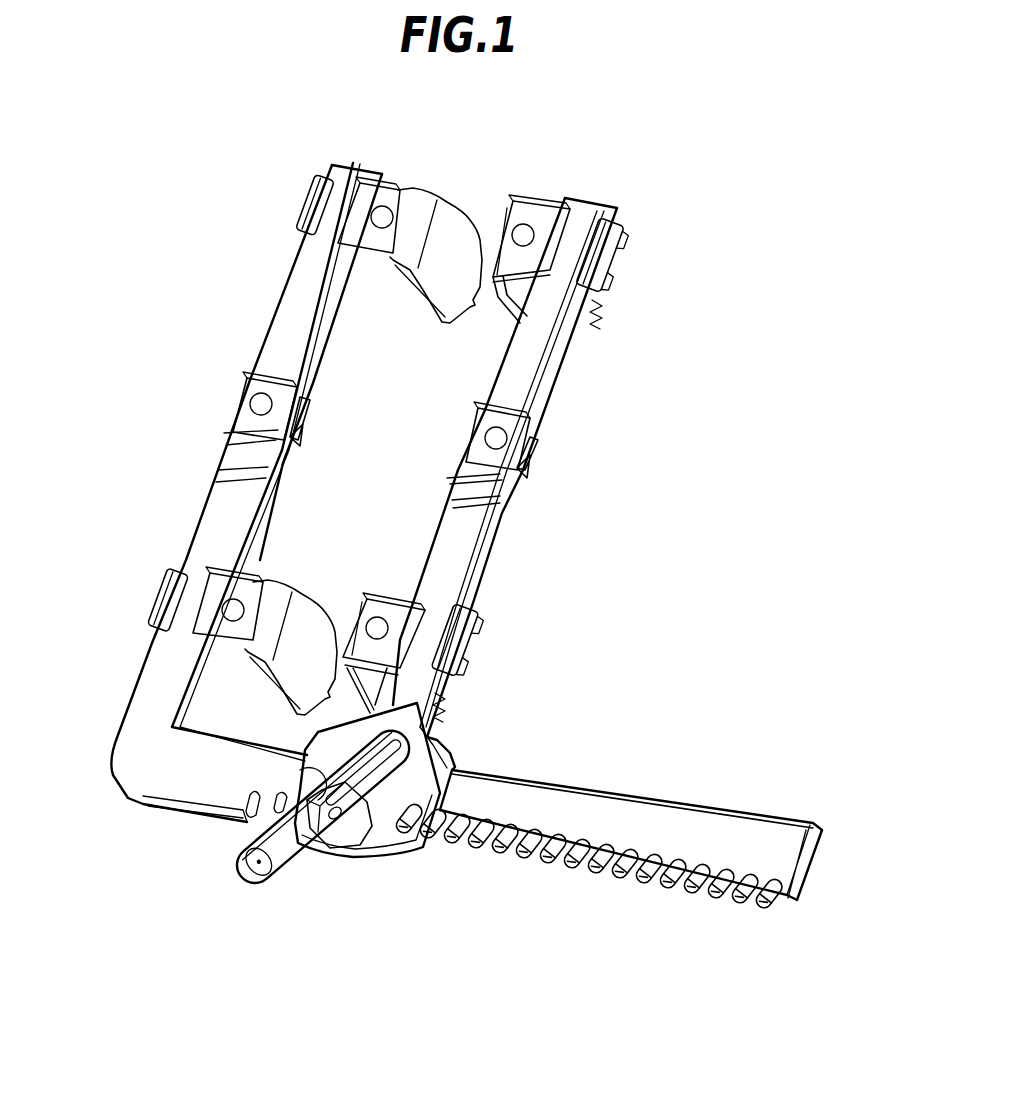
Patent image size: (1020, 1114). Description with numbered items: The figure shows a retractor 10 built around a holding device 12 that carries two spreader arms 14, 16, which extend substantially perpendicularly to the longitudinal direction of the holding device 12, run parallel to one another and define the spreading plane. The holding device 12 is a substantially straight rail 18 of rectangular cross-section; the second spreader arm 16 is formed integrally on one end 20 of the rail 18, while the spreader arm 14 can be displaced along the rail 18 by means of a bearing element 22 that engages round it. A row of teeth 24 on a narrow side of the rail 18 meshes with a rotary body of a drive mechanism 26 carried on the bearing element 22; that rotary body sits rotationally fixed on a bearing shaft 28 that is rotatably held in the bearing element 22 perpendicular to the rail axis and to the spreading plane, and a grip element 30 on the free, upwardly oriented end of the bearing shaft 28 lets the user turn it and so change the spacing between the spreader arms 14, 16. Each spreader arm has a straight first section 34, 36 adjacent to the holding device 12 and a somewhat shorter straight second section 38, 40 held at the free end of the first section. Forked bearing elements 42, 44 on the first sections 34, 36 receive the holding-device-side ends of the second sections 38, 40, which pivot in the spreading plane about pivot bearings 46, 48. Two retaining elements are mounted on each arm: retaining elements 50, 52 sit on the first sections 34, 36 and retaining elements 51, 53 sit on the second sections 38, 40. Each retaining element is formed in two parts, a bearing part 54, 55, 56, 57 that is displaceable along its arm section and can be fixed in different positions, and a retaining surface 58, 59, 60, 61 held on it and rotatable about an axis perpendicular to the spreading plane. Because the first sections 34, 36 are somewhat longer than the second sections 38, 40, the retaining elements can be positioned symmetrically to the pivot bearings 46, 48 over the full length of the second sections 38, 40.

The retractor 10 is at (696, 487).
The holding device 12 is at (480, 905).
The spreader arm 14 is at (535, 536).
The spreader arm 16 is at (188, 456).
The rail 18 is at (700, 780).
The end of rail 20 is at (120, 815).
The bearing element 22 is at (470, 745).
The row of teeth 24 is at (604, 876).
The drive mechanism 26 is at (318, 886).
The bearing shaft 28 is at (345, 847).
The grip element 30 is at (256, 871).
The first section 34 is at (457, 566).
The first section 36 is at (222, 527).
The second section 38 is at (535, 351).
The second section 40 is at (300, 313).
The forked bearing element 42 is at (540, 451).
The forked bearing element 44 is at (300, 421).
The pivot bearing 46 is at (490, 433).
The pivot bearing 48 is at (258, 401).
The retaining element 50 is at (520, 190).
The retaining element 51 is at (380, 585).
The retaining element 52 is at (432, 176).
The retaining element 53 is at (294, 572).
The bearing part 54 is at (598, 258).
The bearing part 55 is at (442, 650).
The bearing part 56 is at (168, 598).
The bearing part 57 is at (312, 207).
The retaining surface 58 is at (496, 301).
The retaining surface 59 is at (374, 632).
The retaining surface 60 is at (438, 293).
The retaining surface 61 is at (293, 684).